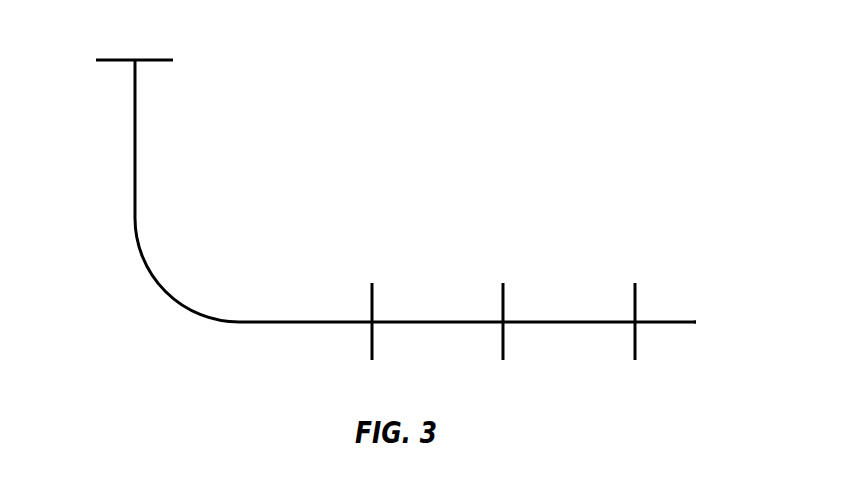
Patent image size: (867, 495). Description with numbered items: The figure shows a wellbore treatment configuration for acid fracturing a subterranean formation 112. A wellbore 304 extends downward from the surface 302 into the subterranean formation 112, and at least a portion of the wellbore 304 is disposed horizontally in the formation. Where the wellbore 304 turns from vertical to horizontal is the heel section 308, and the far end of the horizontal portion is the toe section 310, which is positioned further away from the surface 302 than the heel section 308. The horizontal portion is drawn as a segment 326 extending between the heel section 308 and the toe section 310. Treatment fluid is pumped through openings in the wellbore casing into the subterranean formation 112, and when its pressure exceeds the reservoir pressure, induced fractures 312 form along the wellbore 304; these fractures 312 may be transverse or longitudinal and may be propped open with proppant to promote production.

The subterranean formation 112 is at (513, 135).
The surface 302 is at (118, 58).
The wellbore 304 is at (133, 133).
The heel section 308 is at (172, 295).
The toe section 310 is at (690, 322).
The fractures 312 is at (370, 295).
The horizontal segment 326 is at (542, 322).